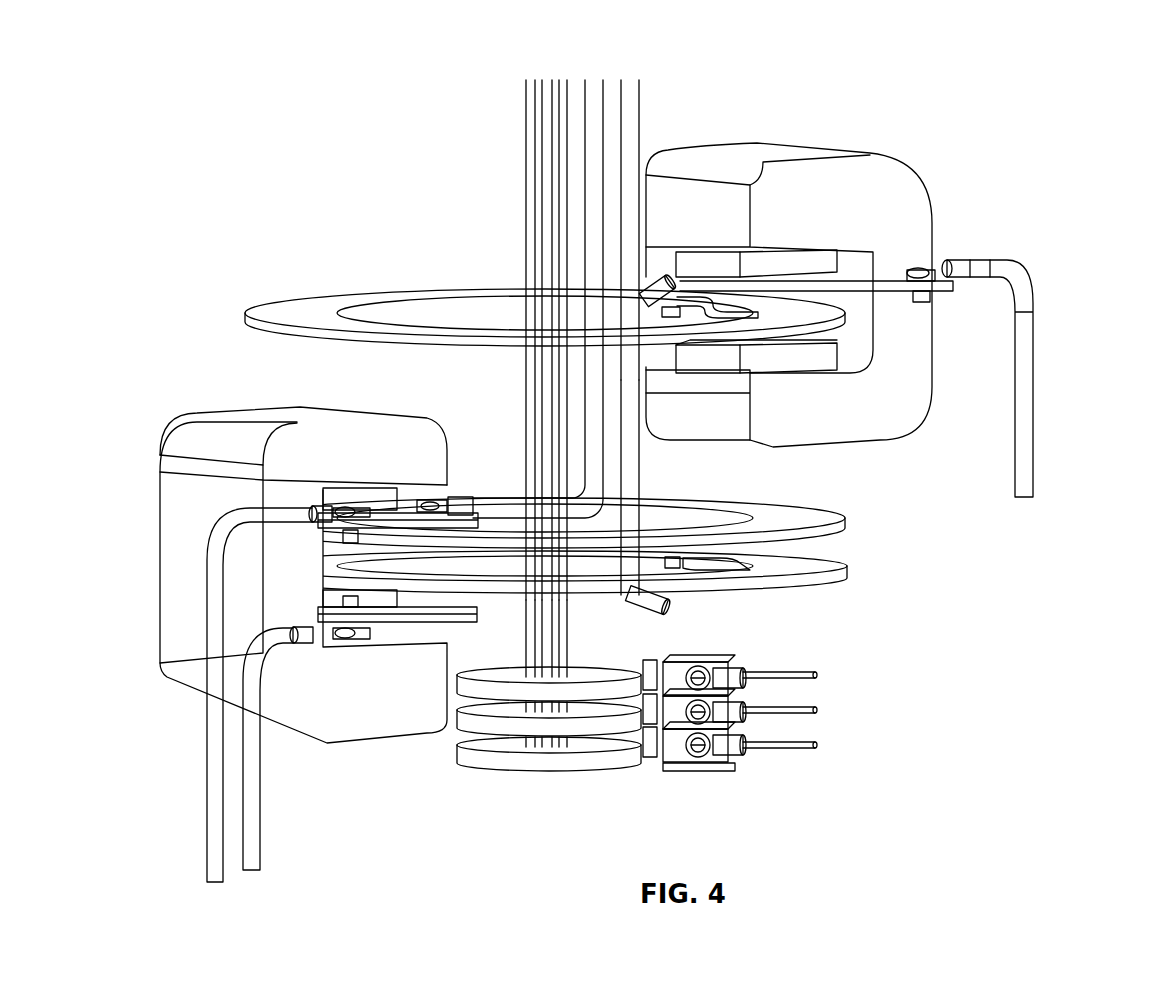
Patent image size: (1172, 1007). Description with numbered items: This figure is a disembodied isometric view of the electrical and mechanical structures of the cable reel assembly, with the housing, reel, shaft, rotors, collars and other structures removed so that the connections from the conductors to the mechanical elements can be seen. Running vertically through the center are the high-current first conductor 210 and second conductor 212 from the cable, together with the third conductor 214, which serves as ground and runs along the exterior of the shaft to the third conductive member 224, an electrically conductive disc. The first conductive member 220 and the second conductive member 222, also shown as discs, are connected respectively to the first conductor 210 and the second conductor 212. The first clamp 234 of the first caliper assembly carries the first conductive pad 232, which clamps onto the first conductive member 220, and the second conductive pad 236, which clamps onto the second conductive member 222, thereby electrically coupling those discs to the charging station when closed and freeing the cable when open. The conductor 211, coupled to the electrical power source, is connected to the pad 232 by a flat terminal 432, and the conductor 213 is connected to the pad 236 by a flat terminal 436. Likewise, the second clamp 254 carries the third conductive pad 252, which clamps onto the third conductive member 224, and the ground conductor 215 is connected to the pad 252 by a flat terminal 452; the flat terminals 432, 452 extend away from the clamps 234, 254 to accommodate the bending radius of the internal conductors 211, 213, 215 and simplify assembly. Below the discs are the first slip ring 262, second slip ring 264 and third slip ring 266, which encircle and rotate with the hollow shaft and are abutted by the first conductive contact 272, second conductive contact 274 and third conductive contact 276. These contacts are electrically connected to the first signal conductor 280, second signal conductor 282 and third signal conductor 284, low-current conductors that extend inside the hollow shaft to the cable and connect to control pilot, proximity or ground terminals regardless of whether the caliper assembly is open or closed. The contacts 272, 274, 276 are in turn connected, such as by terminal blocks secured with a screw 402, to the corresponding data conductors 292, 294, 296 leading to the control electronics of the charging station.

The first conductor 210 is at (593, 138).
The second conductor 212 is at (637, 457).
The third conductor 214 is at (646, 120).
The ground conductor 215 is at (1027, 423).
The first conductive member 220 is at (817, 515).
The second conductive member 222 is at (827, 577).
The third conductive member 224 is at (292, 310).
The first conductive pad 232 is at (322, 523).
The first clamp 234 is at (303, 575).
The second conductive pad 236 is at (325, 612).
The third conductive pad 252 is at (757, 298).
The second clamp 254 is at (789, 295).
The first slip ring 262 is at (603, 692).
The second slip ring 264 is at (570, 723).
The third slip ring 266 is at (608, 760).
The first conductive contact 272 is at (655, 665).
The second conductive contact 274 is at (657, 727).
The third conductive contact 276 is at (650, 767).
The first signal conductor 280 is at (566, 640).
The second signal conductor 282 is at (547, 662).
The third signal conductor 284 is at (532, 662).
The data conductor 292 is at (820, 675).
The data conductor 294 is at (820, 710).
The data conductor 296 is at (820, 745).
The screw 402 is at (717, 767).
The flat terminal 432 is at (397, 510).
The flat terminal 436 is at (383, 620).
The flat terminal 452 is at (862, 292).
The conductor 211 is at (215, 842).
The conductor 213 is at (253, 838).